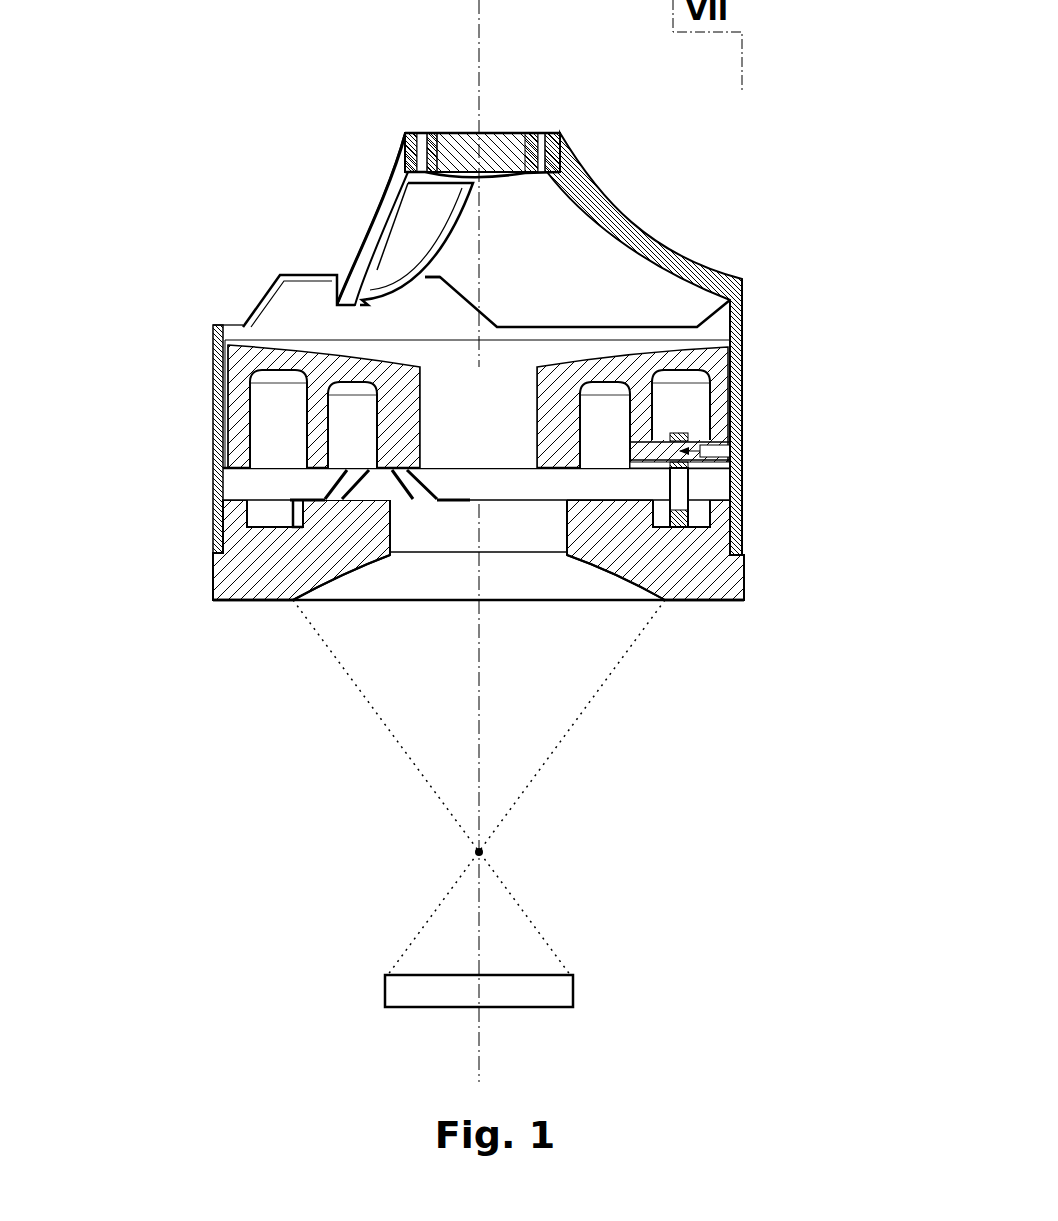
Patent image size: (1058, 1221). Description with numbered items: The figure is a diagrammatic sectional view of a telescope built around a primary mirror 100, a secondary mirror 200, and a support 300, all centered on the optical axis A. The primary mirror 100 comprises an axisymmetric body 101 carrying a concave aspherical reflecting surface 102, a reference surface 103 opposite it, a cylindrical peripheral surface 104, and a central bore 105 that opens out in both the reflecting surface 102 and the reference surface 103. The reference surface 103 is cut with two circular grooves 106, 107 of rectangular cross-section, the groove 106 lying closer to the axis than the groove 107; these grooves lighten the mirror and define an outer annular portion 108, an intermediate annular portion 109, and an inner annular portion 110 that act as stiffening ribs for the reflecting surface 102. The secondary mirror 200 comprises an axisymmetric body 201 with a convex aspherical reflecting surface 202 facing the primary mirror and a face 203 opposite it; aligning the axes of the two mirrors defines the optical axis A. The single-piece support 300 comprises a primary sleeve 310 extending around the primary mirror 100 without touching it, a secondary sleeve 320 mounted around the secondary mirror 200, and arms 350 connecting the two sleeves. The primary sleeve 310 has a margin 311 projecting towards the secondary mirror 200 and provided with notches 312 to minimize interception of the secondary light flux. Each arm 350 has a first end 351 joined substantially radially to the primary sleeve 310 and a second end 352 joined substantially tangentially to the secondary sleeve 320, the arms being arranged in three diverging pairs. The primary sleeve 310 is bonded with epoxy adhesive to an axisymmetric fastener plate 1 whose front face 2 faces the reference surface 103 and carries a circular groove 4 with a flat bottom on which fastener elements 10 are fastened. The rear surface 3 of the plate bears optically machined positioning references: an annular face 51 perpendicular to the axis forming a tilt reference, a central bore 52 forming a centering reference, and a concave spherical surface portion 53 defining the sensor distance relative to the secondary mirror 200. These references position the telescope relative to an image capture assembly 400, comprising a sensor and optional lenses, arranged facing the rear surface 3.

The fastener plate 1 is at (730, 577).
The front face 2 is at (232, 470).
The rear surface 3 is at (235, 610).
The groove 4 is at (703, 515).
The fastener element 10 is at (699, 484).
The annular face 51 is at (694, 612).
The central bore 52 is at (562, 537).
The concave surface portion 53 is at (640, 553).
The primary mirror 100 is at (720, 395).
The axisymmetric body 101 is at (240, 367).
The reflecting surface 102 is at (294, 340).
The reference surface 103 is at (395, 482).
The peripheral surface 104 is at (220, 403).
The central bore 105 is at (421, 447).
The groove 106 is at (608, 472).
The groove 107 is at (282, 372).
The outer annular portion 108 is at (236, 510).
The intermediate annular portion 109 is at (318, 470).
The inner annular portion 110 is at (407, 457).
The secondary mirror 200 is at (516, 130).
The axisymmetric body 201 is at (457, 130).
The reflecting surface 202 is at (511, 190).
The face 203 is at (483, 128).
The support 300 is at (680, 236).
The primary sleeve 310 is at (744, 347).
The margin 311 is at (744, 280).
The notch 312 is at (552, 323).
The secondary sleeve 320 is at (396, 143).
The arm 350 is at (373, 247).
The first end 351 is at (348, 278).
The second end 352 is at (397, 180).
The image capture assembly 400 is at (565, 992).
The optical axis A is at (481, 1058).